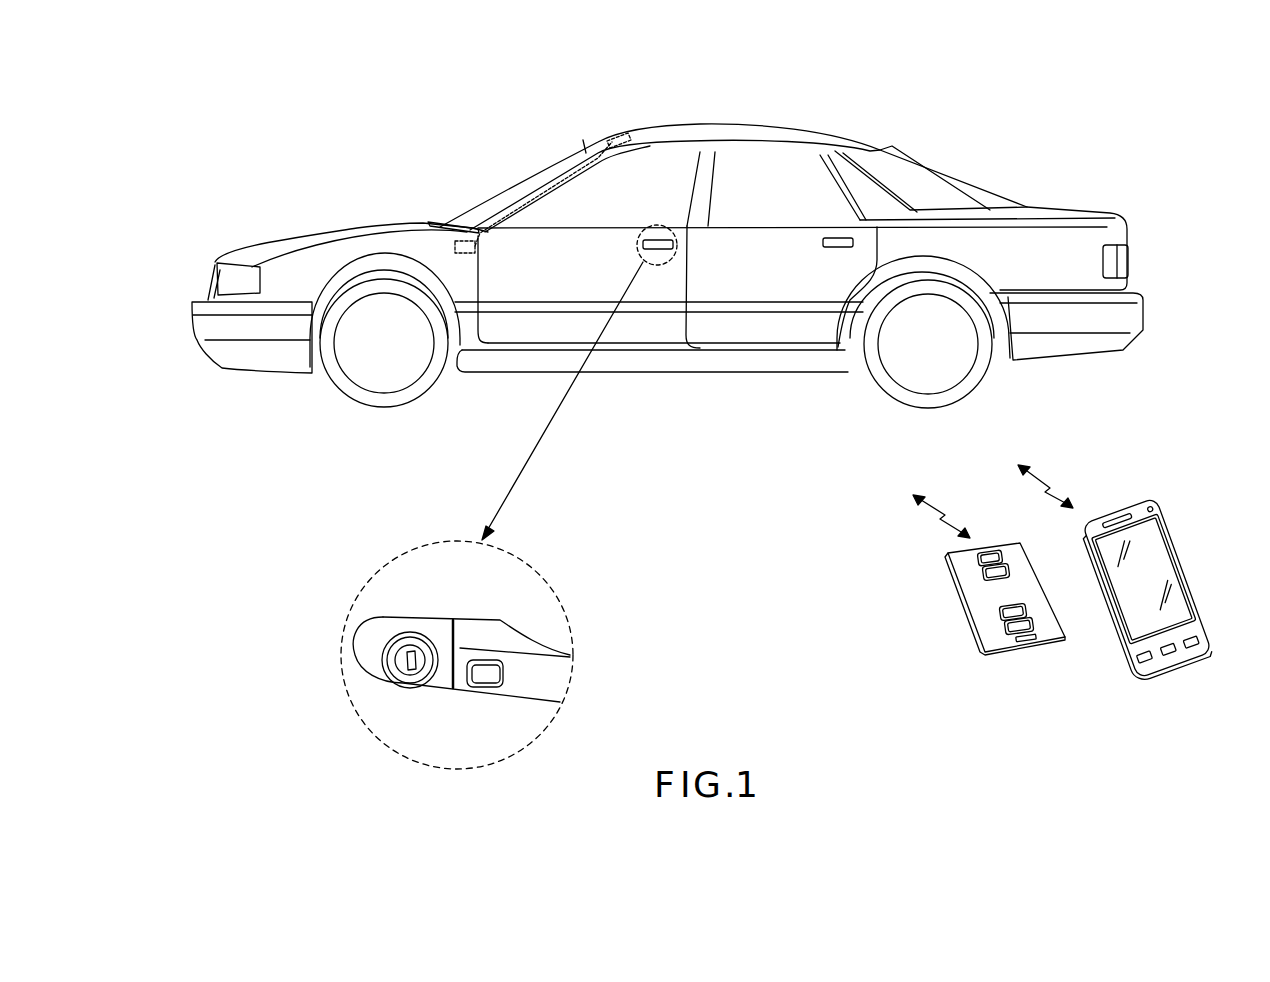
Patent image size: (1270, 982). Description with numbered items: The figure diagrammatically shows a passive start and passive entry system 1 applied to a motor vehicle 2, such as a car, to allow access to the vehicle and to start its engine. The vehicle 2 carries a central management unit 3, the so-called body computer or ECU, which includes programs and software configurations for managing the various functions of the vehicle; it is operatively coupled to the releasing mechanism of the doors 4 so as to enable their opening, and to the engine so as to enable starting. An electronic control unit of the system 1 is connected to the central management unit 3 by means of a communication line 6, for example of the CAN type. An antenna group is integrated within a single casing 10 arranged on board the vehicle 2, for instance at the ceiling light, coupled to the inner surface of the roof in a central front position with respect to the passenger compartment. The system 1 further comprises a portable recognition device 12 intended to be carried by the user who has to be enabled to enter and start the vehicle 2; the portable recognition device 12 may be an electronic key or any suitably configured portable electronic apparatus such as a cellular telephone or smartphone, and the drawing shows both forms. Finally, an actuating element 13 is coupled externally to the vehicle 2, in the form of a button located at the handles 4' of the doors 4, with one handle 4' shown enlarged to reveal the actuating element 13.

The passive start and passive entry system 1 is at (226, 116).
The motor vehicle 2 is at (672, 384).
The central management unit 3 is at (465, 236).
The doors 4 is at (577, 321).
The handles 4' is at (424, 659).
The communication line 6 is at (531, 200).
The casing 10 is at (620, 136).
The portable recognition device 12 is at (993, 640).
The actuating element 13 is at (490, 678).